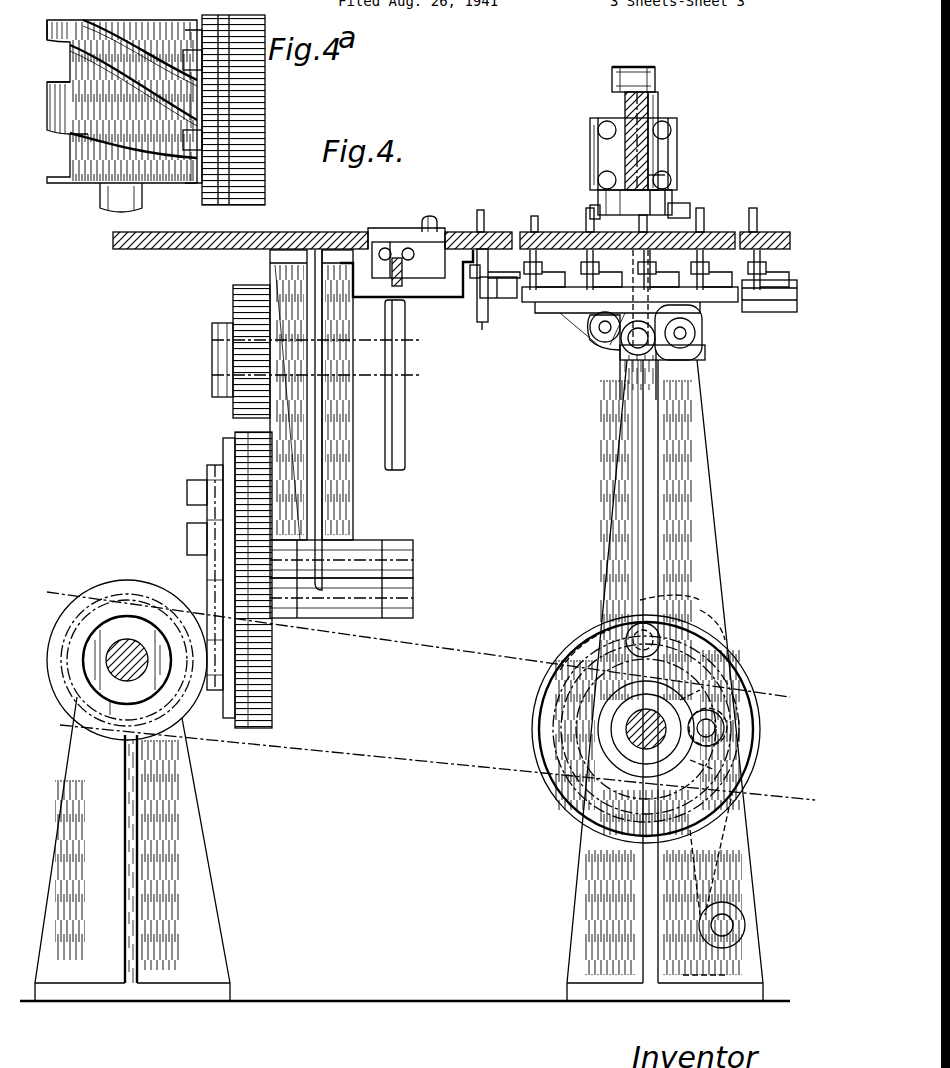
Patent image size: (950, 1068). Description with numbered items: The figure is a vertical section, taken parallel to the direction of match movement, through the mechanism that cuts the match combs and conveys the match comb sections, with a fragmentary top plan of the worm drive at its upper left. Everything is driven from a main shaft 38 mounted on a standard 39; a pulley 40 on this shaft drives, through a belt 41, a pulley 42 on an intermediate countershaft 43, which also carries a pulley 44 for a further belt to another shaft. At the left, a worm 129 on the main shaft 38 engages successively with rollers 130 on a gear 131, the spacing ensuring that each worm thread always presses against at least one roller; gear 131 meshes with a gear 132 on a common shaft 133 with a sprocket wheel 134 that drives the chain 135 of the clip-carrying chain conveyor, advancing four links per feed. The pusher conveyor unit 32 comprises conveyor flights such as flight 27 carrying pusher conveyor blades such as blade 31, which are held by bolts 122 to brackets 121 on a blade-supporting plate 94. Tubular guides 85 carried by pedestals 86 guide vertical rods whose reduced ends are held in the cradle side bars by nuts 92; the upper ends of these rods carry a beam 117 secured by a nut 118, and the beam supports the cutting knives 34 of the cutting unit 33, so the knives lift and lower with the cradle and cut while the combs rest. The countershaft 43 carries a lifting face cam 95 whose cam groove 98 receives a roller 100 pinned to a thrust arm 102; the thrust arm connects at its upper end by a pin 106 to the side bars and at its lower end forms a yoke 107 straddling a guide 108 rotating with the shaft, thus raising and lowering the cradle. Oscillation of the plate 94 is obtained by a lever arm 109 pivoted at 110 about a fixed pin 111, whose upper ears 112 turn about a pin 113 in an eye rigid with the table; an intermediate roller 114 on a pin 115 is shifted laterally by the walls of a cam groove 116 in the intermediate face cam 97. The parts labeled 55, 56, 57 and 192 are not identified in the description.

In FIG. 4, the conveyor flight 27 is at (486, 270).
In FIG. 4, the pusher conveyor blade 31 is at (488, 206).
In FIG. 4, the pusher conveyor unit 32 is at (536, 308).
In FIG. 4, the cutting unit 33 is at (658, 95).
In FIG. 4, the cutting knives 34 is at (665, 195).
In FIG. 4A, the main shaft 38 is at (110, 205).
In FIG. 4, the main shaft 38 is at (122, 652).
In FIG. 4, the standard 39 is at (185, 800).
In FIG. 4, the pulley 40 is at (83, 632).
In FIG. 4, the belt 41 is at (496, 655).
In FIG. 4, the pulley 42 is at (700, 750).
In FIG. 4, the countershaft 43 is at (640, 725).
In FIG. 4, the pulley 44 is at (683, 693).
In FIG. 4, the base block 55 is at (598, 197).
In FIG. 4, the bracket 56 is at (388, 232).
In FIG. 4, the stud 57 is at (437, 222).
In FIG. 4, the tubular guides 85 is at (650, 175).
In FIG. 4, the pedestals 86 is at (688, 208).
In FIG. 4, the nuts 92 is at (652, 70).
In FIG. 4, the blade-supporting plate 94 is at (482, 318).
In FIG. 4, the lifting face cam 95 is at (628, 628).
In FIG. 4, the intermediate face cam 97 is at (725, 728).
In FIG. 4, the cam groove 98 is at (610, 645).
In FIG. 4, the rollers 100 is at (700, 600).
In FIG. 4, the thrust arm 102 is at (628, 515).
In FIG. 4, the pins 106 is at (632, 350).
In FIG. 4, the yokes 107 is at (568, 650).
In FIG. 4, the guides 108 is at (722, 628).
In FIG. 4, the lever arm 109 is at (700, 445).
In FIG. 4, the pivot 110 is at (735, 916).
In FIG. 4, the fixed pin 111 is at (725, 928).
In FIG. 4, the ears 112 is at (672, 150).
In FIG. 4, the pin 113 is at (600, 340).
In FIG. 4, the roller 114 is at (700, 690).
In FIG. 4, the pin 115 is at (628, 345).
In FIG. 4, the cam groove 116 is at (715, 770).
In FIG. 4, the beam 117 is at (625, 98).
In FIG. 4, the nut 118 is at (616, 68).
In FIG. 4, the brackets 121 is at (495, 300).
In FIG. 4, the bolts 122 is at (477, 290).
In FIG. 4A, the worm 129 is at (105, 155).
In FIG. 4, the worm 129 is at (135, 592).
In FIG. 4A, the rollers 130 is at (192, 58).
In FIG. 4, the rollers 130 is at (200, 612).
In FIG. 4A, the gear 131 is at (255, 190).
In FIG. 4, the gear 131 is at (258, 672).
In FIG. 4, the gear 132 is at (238, 302).
In FIG. 4, the common shaft 133 is at (222, 345).
In FIG. 4, the sprocket wheel 134 is at (398, 385).
In FIG. 4, the chain 135 is at (400, 287).
In FIG. 4, the cross head 192 is at (700, 360).